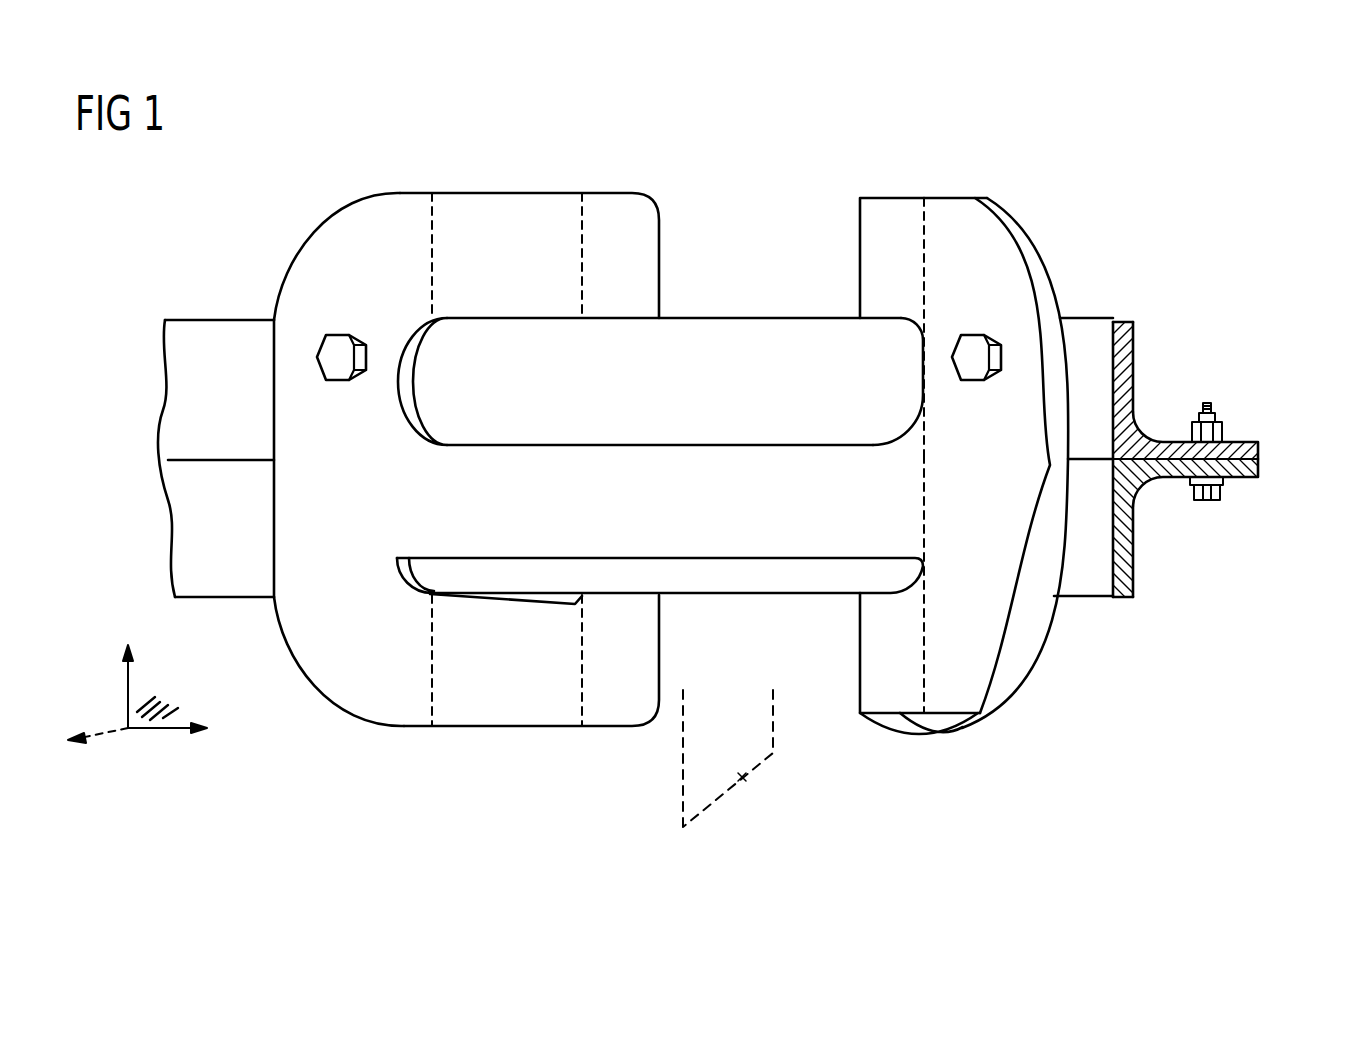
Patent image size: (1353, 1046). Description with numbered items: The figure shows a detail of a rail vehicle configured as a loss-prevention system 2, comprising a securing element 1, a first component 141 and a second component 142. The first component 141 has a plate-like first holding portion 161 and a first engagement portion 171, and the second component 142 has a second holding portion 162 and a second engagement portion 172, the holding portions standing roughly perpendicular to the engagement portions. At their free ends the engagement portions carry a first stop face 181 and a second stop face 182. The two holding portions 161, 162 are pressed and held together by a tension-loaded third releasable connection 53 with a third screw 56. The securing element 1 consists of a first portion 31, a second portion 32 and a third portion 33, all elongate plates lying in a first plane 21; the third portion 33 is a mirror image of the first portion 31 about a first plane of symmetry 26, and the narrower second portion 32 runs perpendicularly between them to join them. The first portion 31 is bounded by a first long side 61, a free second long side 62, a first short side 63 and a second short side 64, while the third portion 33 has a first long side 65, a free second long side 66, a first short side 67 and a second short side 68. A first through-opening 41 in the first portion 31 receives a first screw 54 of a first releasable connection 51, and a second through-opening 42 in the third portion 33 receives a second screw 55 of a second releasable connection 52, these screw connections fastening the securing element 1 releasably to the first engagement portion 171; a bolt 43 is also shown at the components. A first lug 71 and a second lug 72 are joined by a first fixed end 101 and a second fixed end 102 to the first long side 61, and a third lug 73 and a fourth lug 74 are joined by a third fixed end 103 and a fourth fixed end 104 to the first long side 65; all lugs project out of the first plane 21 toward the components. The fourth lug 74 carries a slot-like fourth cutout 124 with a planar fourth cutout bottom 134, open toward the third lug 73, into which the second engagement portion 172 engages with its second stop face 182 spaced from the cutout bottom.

The securing element 1 is at (1015, 280).
The loss-prevention system 2 is at (1036, 161).
The first plane 21 is at (150, 728).
The first plane of symmetry 26 is at (742, 777).
The first portion 31 is at (1005, 660).
The second portion 32 is at (750, 548).
The third portion 33 is at (300, 640).
The first through-opening 41 is at (967, 390).
The first releasable connection 51 is at (978, 382).
The second through-opening 42 is at (334, 390).
The second releasable connection 52 is at (346, 382).
The bolt 43 is at (1198, 462).
The third releasable connection 53 is at (1204, 527).
The third screw 56 is at (1208, 500).
The first screw 54 is at (967, 342).
The second screw 55 is at (337, 340).
The first long side 61 is at (921, 370).
The second long side 62 is at (1055, 385).
The first short side 63 is at (950, 197).
The second short side 64 is at (935, 733).
The first long side 65 is at (405, 382).
The second long side 66 is at (273, 358).
The first short side 67 is at (386, 191).
The second short side 68 is at (380, 730).
The first lug 71 is at (892, 205).
The second lug 72 is at (859, 655).
The third lug 73 is at (515, 192).
The fourth lug 74 is at (505, 727).
The first fixed end 101 is at (923, 262).
The second fixed end 102 is at (925, 605).
The third fixed end 103 is at (433, 262).
The fourth fixed end 104 is at (433, 642).
The fourth cutout 124 is at (583, 598).
The fourth cutout bottom 134 is at (556, 596).
The first component 141 is at (1259, 445).
The second component 142 is at (1259, 470).
The first holding portion 161 is at (1212, 432).
The second holding portion 162 is at (1240, 480).
The first engagement portion 171 is at (1134, 337).
The second engagement portion 172 is at (1134, 580).
The first stop face 181 is at (1124, 322).
The second stop face 182 is at (1125, 598).